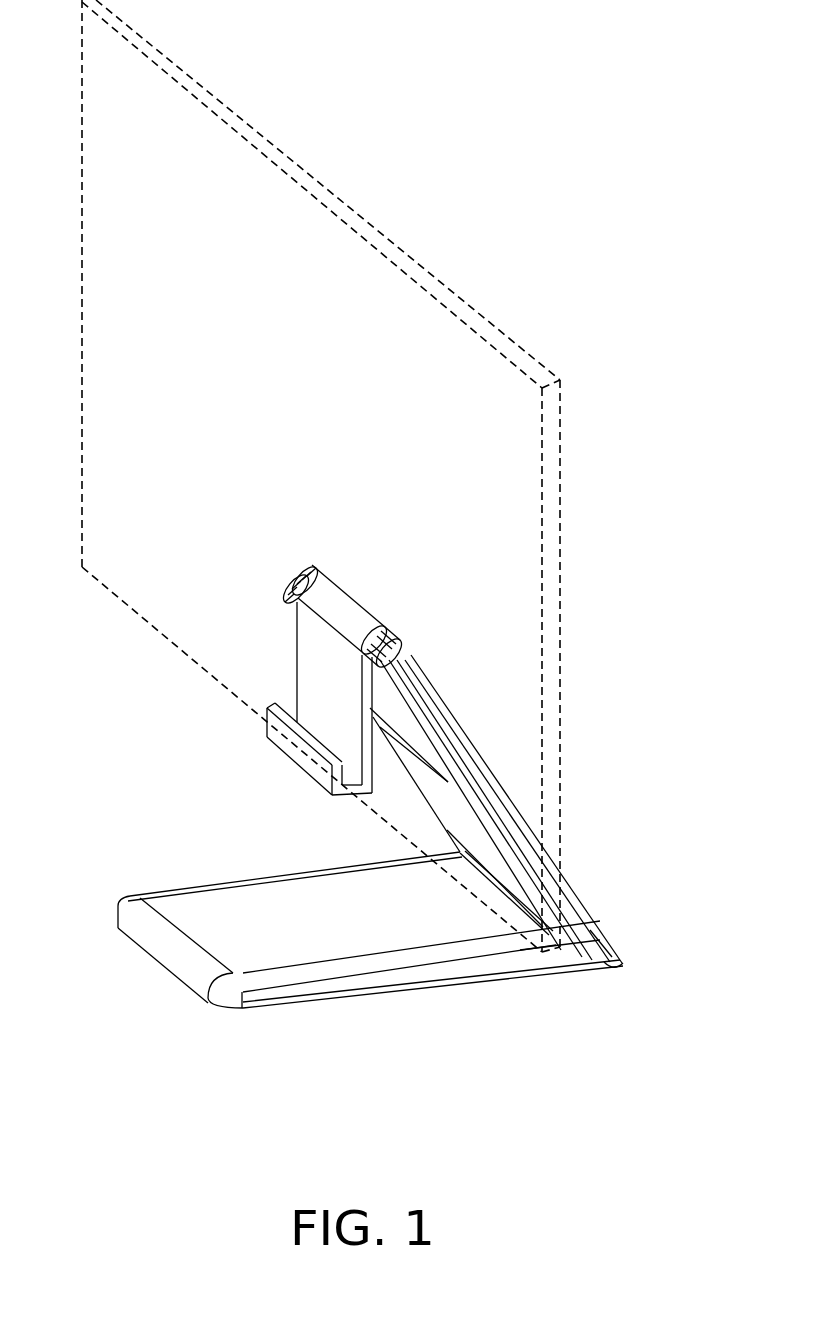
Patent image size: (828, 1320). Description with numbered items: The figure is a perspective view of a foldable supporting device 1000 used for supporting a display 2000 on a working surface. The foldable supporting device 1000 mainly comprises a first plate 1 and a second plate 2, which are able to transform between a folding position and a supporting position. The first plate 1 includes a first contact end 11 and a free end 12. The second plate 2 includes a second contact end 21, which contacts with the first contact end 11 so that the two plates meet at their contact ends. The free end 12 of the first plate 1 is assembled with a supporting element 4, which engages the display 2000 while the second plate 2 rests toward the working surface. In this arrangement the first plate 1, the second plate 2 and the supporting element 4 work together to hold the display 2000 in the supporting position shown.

The display 2000 is at (398, 278).
The foldable supporting device 1000 is at (428, 1016).
The first plate 1 is at (471, 756).
The first contact end 11 is at (588, 925).
The free end 12 is at (375, 628).
The second plate 2 is at (370, 931).
The second contact end 21 is at (557, 958).
The supporting element 4 is at (307, 674).